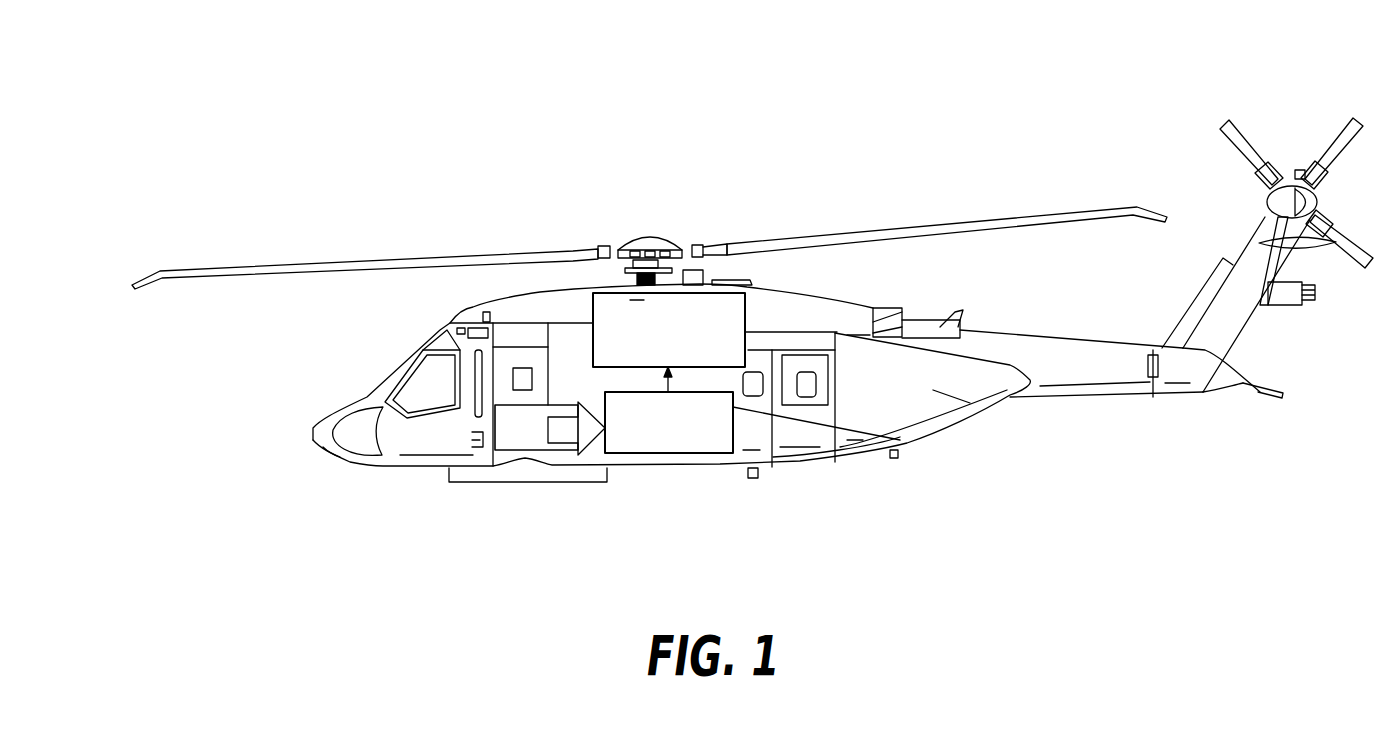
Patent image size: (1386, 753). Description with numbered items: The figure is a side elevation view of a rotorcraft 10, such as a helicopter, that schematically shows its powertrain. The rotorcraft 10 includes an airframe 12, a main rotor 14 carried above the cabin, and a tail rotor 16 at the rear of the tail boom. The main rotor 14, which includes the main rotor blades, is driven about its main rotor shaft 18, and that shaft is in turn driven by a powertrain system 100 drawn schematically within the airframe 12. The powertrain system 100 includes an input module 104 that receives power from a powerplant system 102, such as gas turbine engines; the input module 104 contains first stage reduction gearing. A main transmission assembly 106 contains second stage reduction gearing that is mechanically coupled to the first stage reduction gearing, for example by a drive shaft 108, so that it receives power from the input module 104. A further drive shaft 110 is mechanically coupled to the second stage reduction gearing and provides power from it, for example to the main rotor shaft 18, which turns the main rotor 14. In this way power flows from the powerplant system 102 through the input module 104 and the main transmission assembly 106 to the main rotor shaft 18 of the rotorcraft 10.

The rotorcraft 10 is at (266, 103).
The airframe 12 is at (405, 468).
The main rotor 14 is at (810, 240).
The tail rotor 16 is at (1248, 135).
The main rotor shaft 18 is at (652, 219).
The powertrain system 100 is at (666, 514).
The powerplant system 102 is at (542, 443).
The input module 104 is at (690, 435).
The main transmission assembly 106 is at (690, 342).
The drive shaft 108 is at (677, 383).
The drive shaft 110 is at (637, 308).